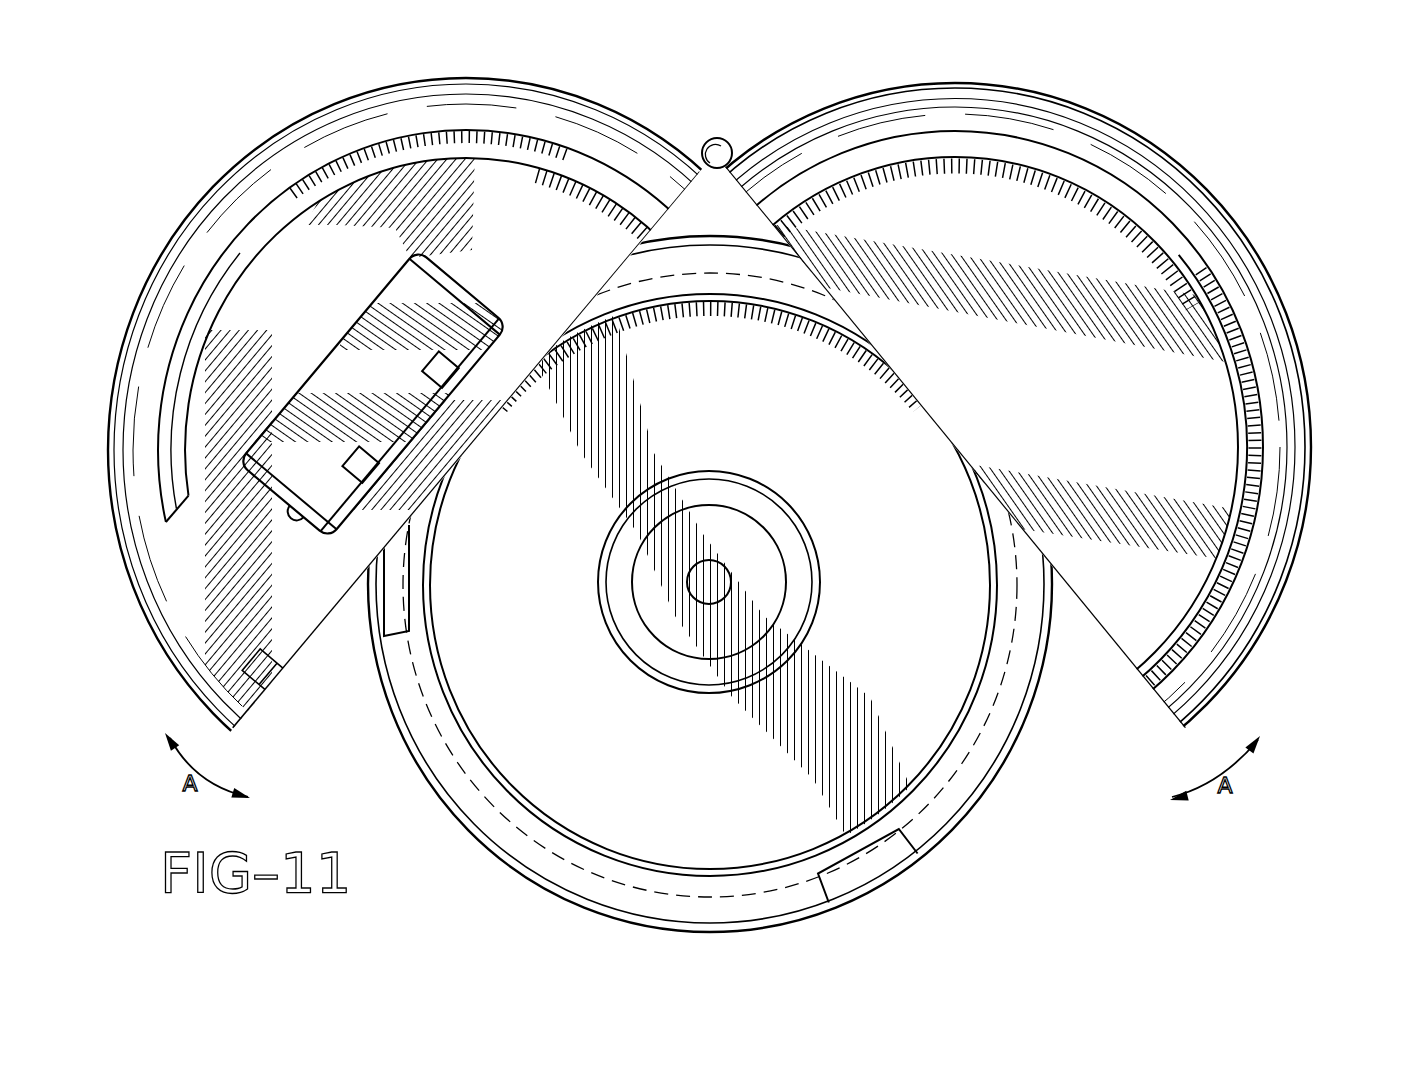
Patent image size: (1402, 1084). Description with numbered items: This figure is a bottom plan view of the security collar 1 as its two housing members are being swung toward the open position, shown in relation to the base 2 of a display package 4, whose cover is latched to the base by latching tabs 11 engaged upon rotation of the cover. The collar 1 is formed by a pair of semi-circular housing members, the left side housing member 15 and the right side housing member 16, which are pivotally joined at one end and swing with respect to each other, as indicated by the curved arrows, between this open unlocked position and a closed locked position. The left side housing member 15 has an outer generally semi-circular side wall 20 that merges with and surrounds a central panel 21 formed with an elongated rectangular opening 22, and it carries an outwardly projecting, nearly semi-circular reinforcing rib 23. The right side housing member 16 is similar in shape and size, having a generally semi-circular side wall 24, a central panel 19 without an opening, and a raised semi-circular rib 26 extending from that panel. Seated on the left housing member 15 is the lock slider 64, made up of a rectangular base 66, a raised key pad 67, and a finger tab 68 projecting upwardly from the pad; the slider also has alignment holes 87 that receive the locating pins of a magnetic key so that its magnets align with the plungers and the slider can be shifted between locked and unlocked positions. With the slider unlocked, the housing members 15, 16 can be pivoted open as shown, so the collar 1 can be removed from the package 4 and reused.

The security collar 1 is at (728, 505).
The base 2 is at (428, 772).
The display package 4 is at (390, 740).
The latching tabs 11 is at (392, 596).
The left side housing member 15 is at (446, 450).
The right side housing member 16 is at (994, 447).
The central panel 19 is at (1190, 410).
The outer side wall 20 is at (140, 290).
The central panel 21 is at (323, 250).
The opening 22 is at (298, 518).
The reinforcing rib 23 is at (252, 232).
The side wall 24 is at (1300, 357).
The raised semi-circular rib 26 is at (1225, 306).
The lock slider 64 is at (400, 414).
The rectangular base 66 is at (340, 523).
The raised key pad 67 is at (400, 288).
The finger tab 68 is at (497, 326).
The alignment holes 87 is at (452, 378).